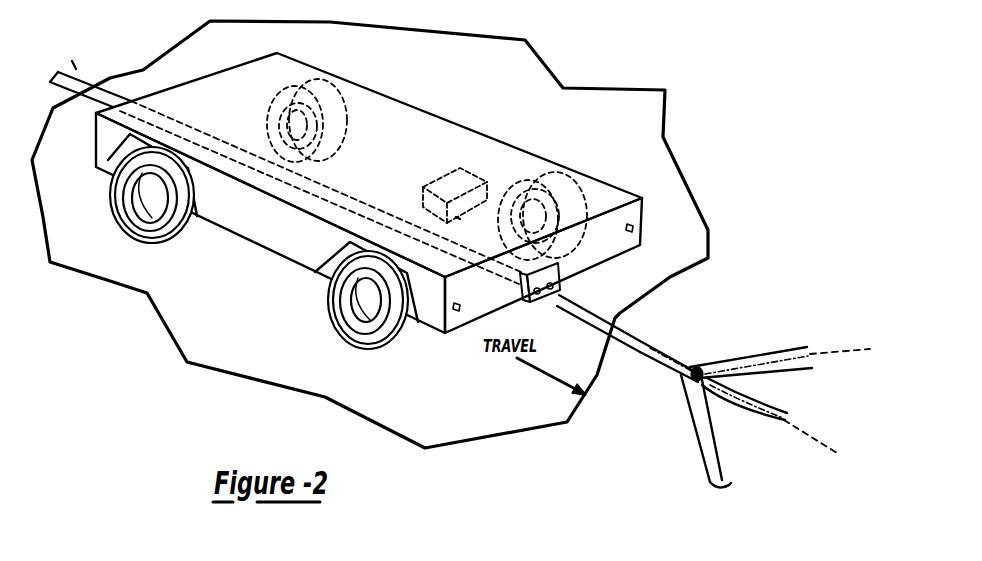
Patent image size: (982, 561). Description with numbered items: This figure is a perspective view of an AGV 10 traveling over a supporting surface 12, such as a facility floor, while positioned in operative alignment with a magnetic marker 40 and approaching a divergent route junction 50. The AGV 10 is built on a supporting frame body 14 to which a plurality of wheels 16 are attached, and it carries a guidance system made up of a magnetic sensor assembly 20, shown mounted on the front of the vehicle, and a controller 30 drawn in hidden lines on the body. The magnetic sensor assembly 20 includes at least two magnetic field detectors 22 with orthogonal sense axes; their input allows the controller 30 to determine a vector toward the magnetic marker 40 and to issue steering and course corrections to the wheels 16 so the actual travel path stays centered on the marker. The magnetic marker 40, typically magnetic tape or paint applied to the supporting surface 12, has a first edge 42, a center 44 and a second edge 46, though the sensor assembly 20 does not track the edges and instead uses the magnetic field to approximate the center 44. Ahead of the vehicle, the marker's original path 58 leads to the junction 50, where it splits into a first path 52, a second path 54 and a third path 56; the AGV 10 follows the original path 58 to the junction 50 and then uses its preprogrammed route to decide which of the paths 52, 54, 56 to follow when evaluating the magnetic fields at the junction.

The AGV 10 is at (466, 144).
The supporting surface 12 is at (463, 408).
The supporting frame body 14 is at (237, 223).
The wheels 16 is at (133, 232).
The magnetic sensor assembly 20 is at (558, 275).
The magnetic field detectors 22 is at (557, 270).
The controller 30 is at (472, 183).
The magnetic marker 40 is at (658, 358).
The first edge 42 is at (683, 373).
The center 44 is at (847, 343).
The second edge 46 is at (645, 363).
The junction 50 is at (680, 377).
The first path 52 is at (702, 453).
The second path 54 is at (763, 417).
The third path 56 is at (785, 367).
The original path 58 is at (638, 350).